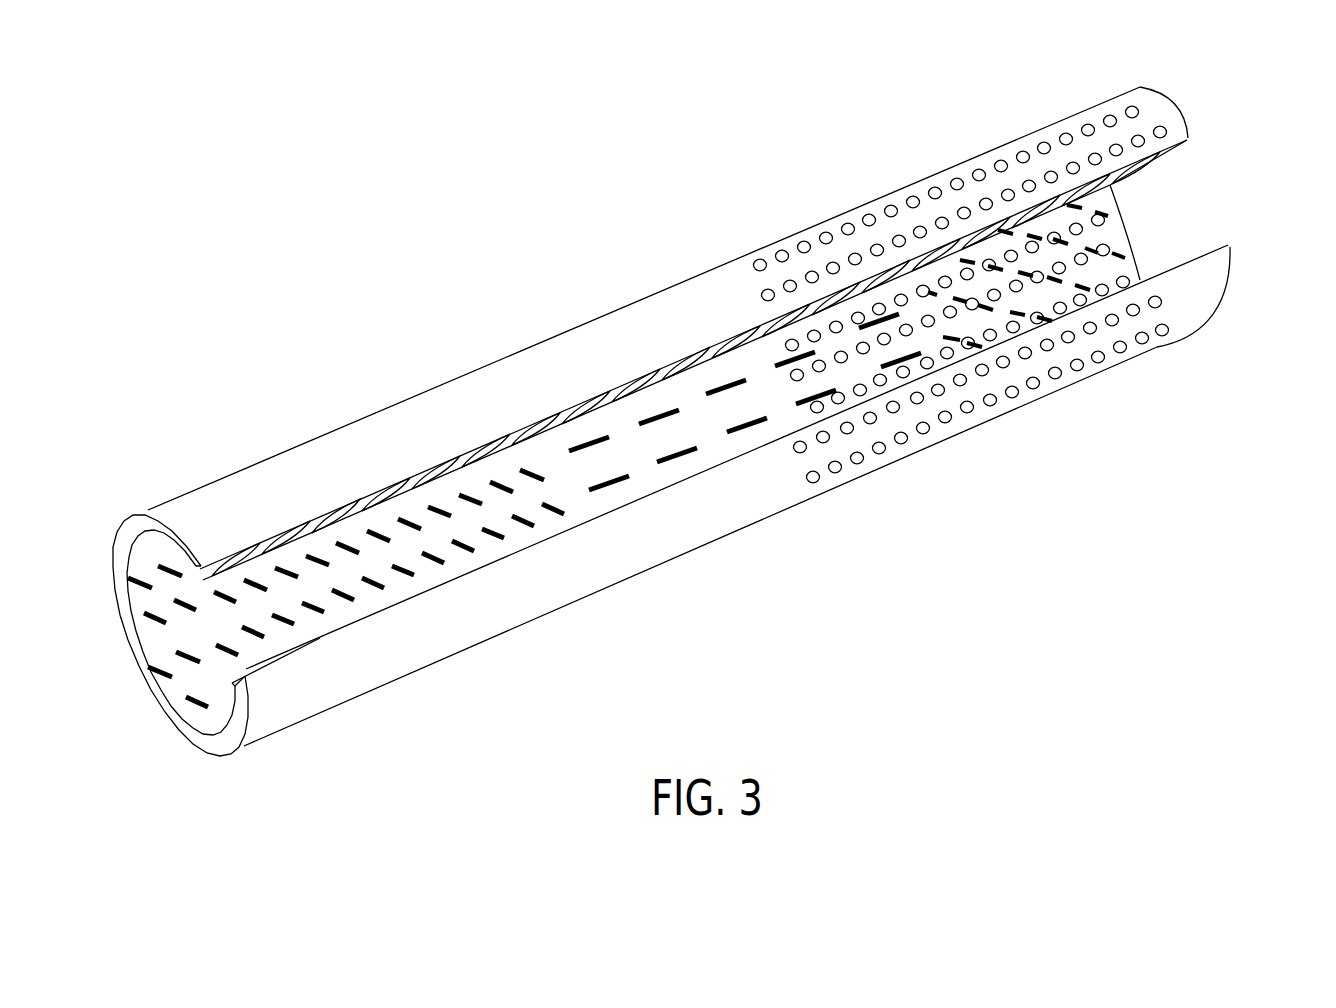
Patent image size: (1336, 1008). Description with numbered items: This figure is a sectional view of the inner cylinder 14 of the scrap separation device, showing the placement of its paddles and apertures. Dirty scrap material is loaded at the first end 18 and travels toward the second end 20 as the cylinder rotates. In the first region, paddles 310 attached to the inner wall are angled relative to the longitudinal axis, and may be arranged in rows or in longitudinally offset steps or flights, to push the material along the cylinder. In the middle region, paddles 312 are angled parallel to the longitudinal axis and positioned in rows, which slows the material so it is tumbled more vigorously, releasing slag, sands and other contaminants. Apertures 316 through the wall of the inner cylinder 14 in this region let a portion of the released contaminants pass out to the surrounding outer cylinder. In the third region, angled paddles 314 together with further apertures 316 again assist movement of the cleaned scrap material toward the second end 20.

The inner cylinder 14 is at (170, 325).
The first end 18 is at (182, 733).
The second end 20 is at (1231, 288).
The paddles 310 is at (404, 575).
The paddles 312 is at (725, 433).
The paddles 314 is at (1128, 252).
The apertures 316 is at (905, 445).